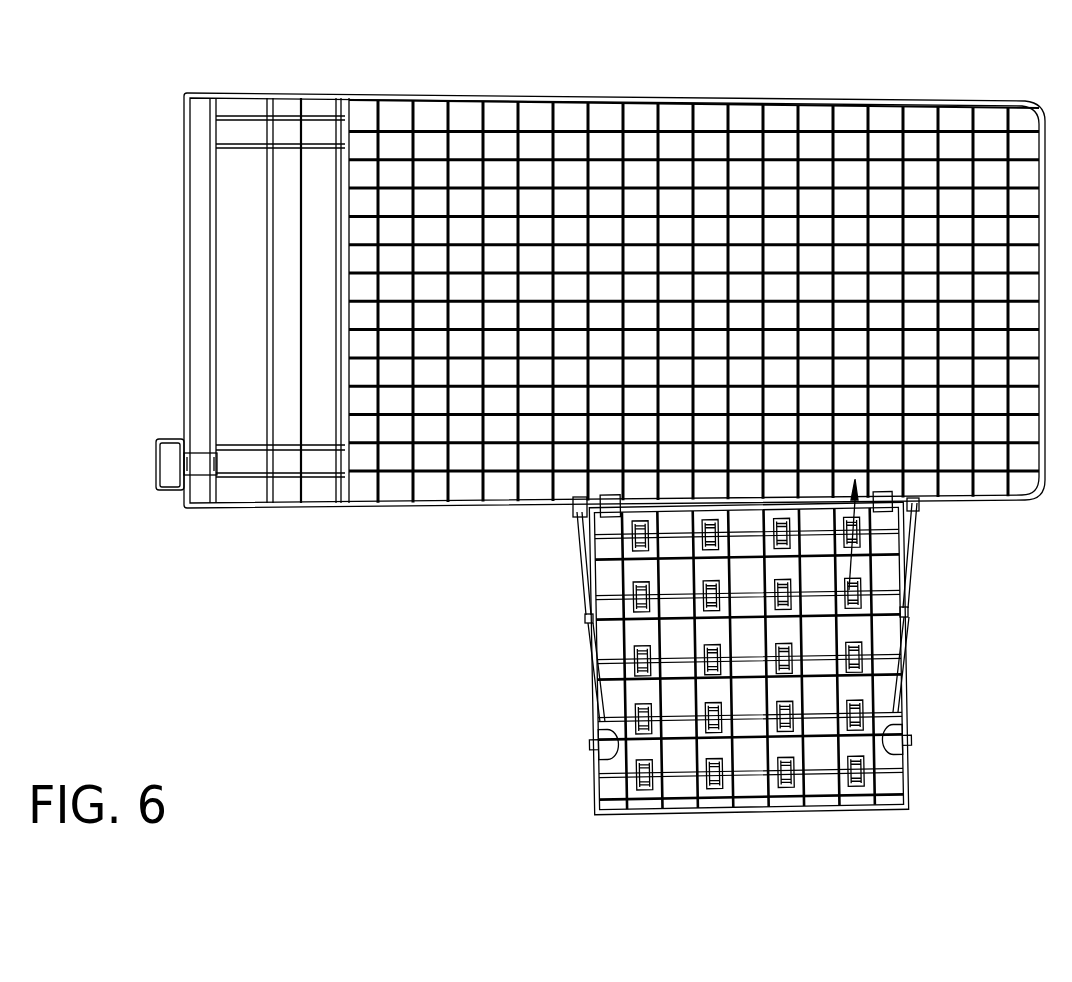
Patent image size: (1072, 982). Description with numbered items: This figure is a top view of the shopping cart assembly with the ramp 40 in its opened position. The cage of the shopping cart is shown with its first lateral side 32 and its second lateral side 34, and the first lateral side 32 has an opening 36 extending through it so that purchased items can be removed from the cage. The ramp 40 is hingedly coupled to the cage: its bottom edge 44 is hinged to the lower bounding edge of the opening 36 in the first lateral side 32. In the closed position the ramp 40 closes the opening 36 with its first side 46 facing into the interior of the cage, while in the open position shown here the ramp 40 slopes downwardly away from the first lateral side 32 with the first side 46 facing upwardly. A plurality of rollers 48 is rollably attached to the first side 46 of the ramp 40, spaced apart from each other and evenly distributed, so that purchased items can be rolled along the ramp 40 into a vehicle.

The first lateral side 32 is at (483, 506).
The second lateral side 34 is at (885, 100).
The opening 36 is at (848, 588).
The ramp 40 is at (695, 691).
The bottom edge 44 is at (640, 507).
The first side 46 is at (872, 632).
The rollers 48 is at (786, 724).